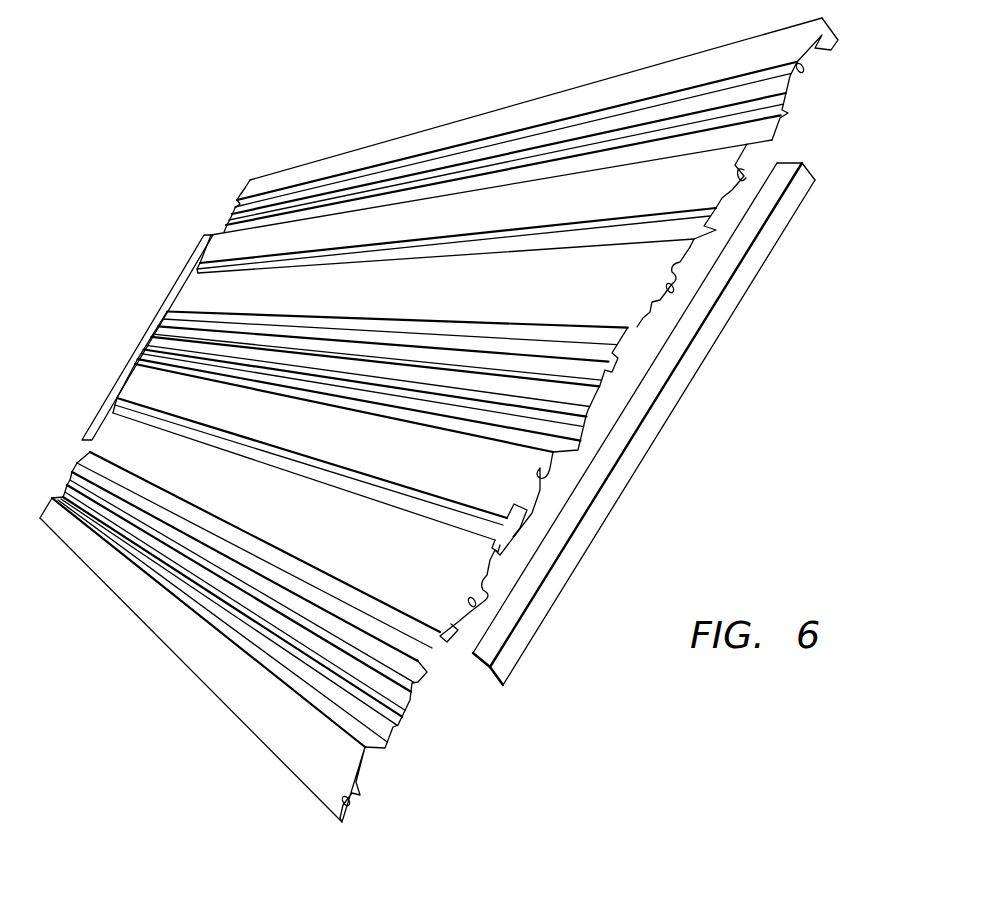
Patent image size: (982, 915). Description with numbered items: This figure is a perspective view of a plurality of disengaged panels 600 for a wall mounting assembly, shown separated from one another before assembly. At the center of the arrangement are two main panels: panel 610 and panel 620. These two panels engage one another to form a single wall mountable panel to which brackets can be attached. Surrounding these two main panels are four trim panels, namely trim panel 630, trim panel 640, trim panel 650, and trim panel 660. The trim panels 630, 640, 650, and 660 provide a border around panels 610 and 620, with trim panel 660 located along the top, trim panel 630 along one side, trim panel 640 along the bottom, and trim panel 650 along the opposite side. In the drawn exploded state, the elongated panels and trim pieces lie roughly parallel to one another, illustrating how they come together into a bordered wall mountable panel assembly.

The disengaged panels 600 is at (155, 208).
The panel 610 is at (698, 250).
The panel 620 is at (437, 675).
The trim panel 630 is at (138, 347).
The trim panel 640 is at (287, 733).
The trim panel 650 is at (647, 437).
The trim panel 660 is at (615, 93).